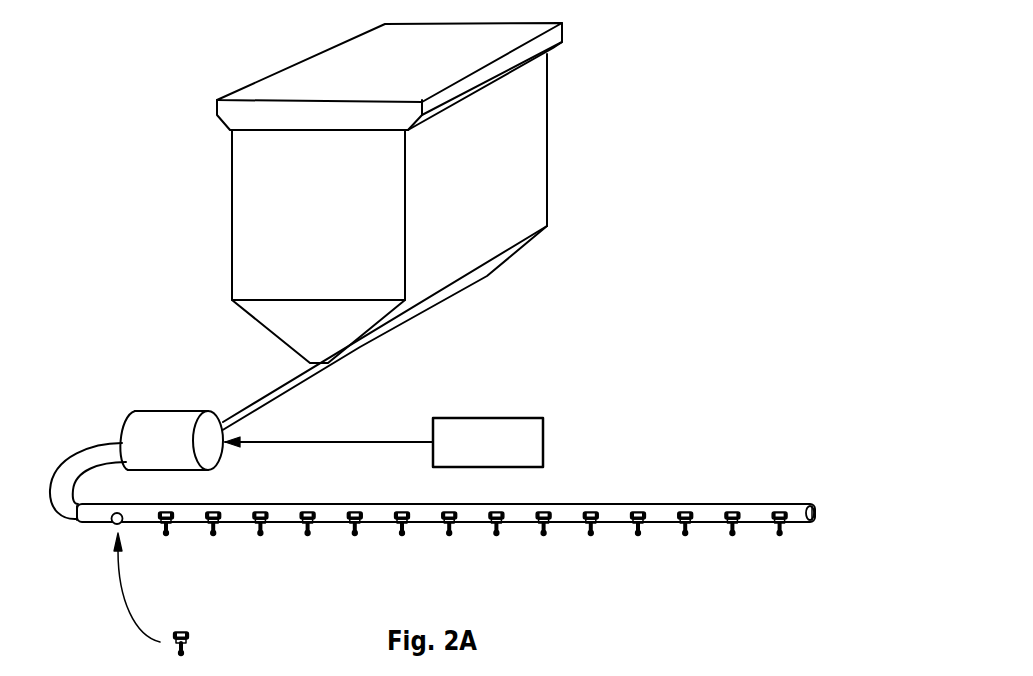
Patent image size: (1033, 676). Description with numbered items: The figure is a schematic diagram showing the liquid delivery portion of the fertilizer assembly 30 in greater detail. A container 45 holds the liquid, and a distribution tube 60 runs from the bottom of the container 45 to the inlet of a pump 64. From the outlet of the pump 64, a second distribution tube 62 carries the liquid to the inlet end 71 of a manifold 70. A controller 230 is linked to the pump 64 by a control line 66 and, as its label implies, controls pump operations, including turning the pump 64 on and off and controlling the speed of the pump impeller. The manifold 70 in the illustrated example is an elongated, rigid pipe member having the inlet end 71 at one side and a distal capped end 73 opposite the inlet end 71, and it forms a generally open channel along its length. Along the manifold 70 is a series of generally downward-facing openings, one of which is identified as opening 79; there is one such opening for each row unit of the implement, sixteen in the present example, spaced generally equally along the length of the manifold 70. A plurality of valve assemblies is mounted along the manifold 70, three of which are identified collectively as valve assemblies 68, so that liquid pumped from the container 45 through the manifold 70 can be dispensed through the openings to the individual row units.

The container 45 is at (513, 132).
The fertilizer assembly 30 is at (665, 338).
The distribution tube 60 is at (262, 394).
The pump 64 is at (220, 458).
The distribution tube 62 is at (79, 446).
The controller 230 is at (543, 442).
The control line 66 is at (356, 441).
The manifold 70 is at (670, 505).
The valve assemblies 68 is at (636, 530).
The opening 79 is at (124, 527).
The inlet end 71 is at (113, 521).
The distal capped end 73 is at (808, 524).